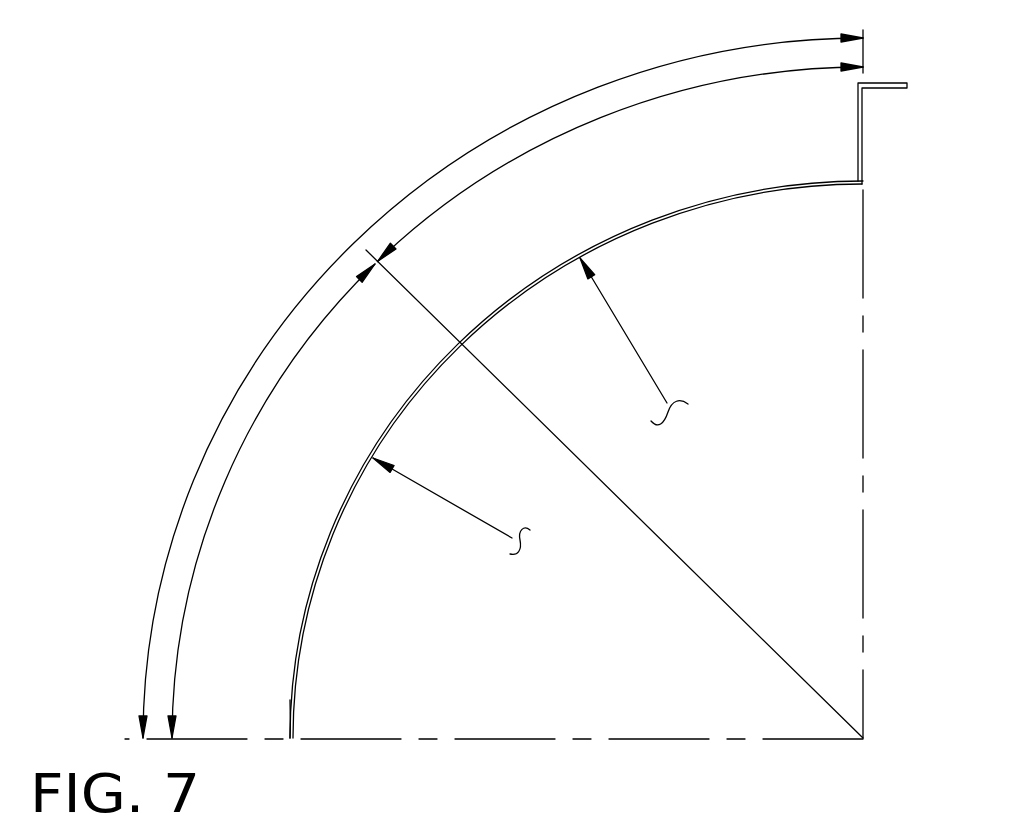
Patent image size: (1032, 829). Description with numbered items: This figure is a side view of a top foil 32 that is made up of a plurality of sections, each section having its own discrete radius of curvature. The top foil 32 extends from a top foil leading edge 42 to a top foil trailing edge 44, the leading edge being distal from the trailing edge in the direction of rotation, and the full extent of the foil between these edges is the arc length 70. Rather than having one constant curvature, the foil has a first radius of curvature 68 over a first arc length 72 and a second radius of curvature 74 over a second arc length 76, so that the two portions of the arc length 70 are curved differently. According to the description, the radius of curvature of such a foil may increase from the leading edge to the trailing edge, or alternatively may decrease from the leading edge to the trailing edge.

The top foil 32 is at (313, 598).
The top foil leading edge 42 is at (864, 186).
The top foil trailing edge 44 is at (291, 741).
The first radius of curvature 68 is at (630, 340).
The arc length 70 is at (307, 295).
The first arc length 72 is at (600, 118).
The second radius of curvature 74 is at (457, 507).
The second arc length 76 is at (228, 483).